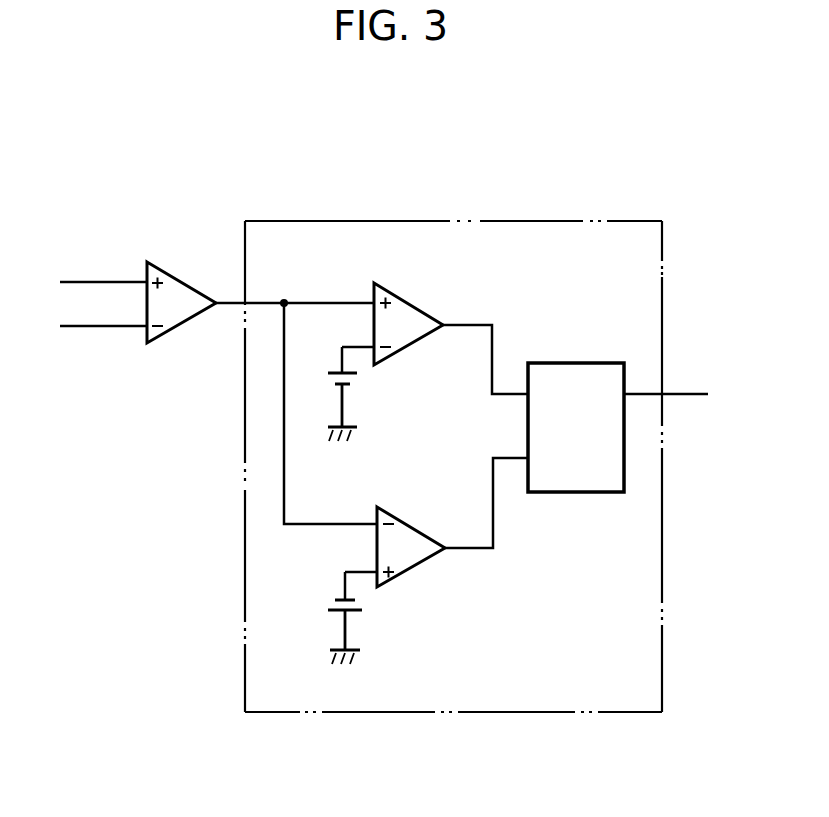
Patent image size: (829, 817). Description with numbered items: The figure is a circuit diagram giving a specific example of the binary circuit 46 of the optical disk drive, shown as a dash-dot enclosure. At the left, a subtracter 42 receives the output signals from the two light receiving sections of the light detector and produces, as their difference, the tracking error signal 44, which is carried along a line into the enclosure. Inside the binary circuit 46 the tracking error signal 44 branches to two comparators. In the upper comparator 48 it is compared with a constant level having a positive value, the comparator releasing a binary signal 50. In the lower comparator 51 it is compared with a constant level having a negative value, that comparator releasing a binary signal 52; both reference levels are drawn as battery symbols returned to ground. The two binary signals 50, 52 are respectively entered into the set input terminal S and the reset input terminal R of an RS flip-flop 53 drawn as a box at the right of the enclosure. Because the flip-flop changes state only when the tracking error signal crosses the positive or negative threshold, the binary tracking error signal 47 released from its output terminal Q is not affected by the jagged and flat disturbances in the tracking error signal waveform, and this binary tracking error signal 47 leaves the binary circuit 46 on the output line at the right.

The subtracter 42 is at (188, 284).
The tracking error signal 44 is at (231, 306).
The binary circuit 46 is at (393, 221).
The binary tracking error signal 47 is at (684, 392).
The comparator 48 is at (400, 292).
The binary signal 50 is at (480, 323).
The comparator 51 is at (420, 565).
The binary signal 52 is at (468, 547).
The RS flip-flop 53 is at (572, 362).